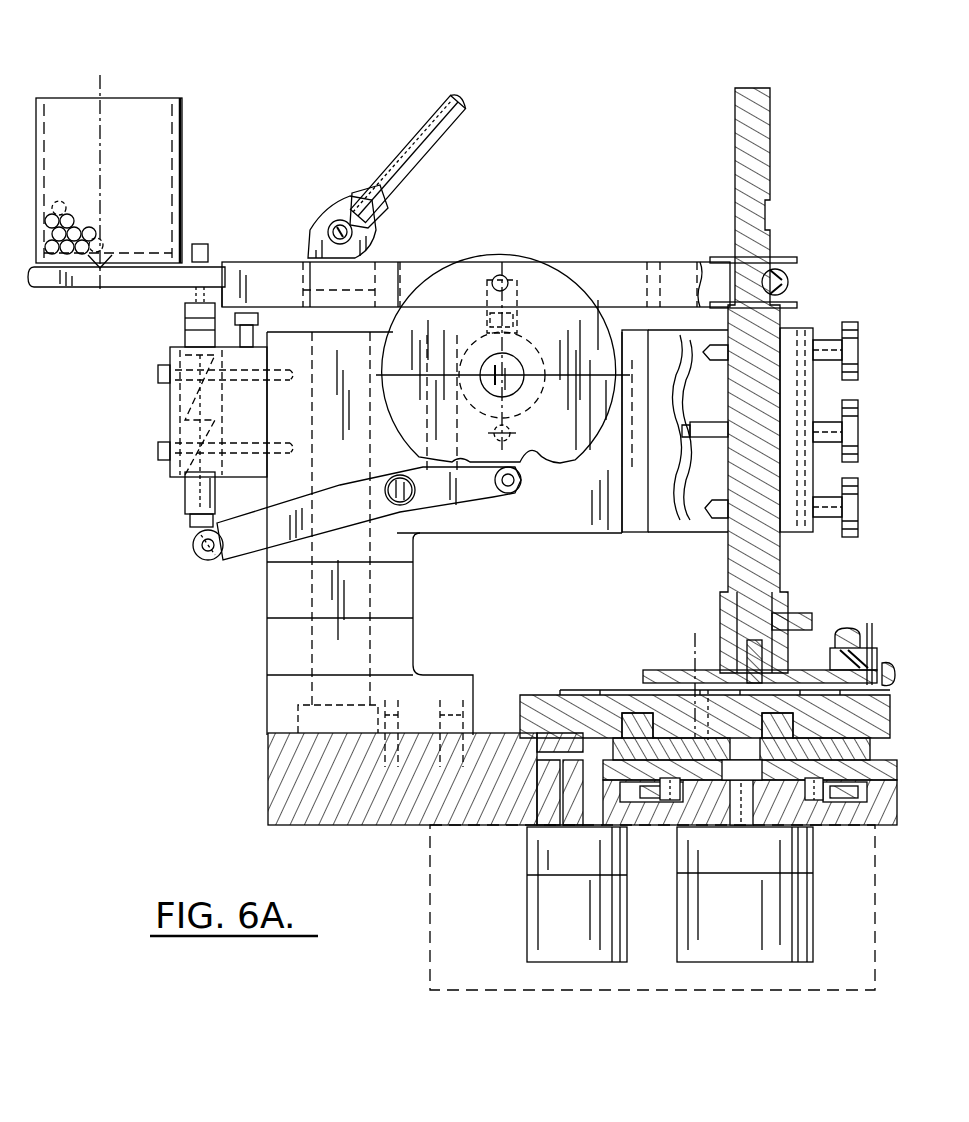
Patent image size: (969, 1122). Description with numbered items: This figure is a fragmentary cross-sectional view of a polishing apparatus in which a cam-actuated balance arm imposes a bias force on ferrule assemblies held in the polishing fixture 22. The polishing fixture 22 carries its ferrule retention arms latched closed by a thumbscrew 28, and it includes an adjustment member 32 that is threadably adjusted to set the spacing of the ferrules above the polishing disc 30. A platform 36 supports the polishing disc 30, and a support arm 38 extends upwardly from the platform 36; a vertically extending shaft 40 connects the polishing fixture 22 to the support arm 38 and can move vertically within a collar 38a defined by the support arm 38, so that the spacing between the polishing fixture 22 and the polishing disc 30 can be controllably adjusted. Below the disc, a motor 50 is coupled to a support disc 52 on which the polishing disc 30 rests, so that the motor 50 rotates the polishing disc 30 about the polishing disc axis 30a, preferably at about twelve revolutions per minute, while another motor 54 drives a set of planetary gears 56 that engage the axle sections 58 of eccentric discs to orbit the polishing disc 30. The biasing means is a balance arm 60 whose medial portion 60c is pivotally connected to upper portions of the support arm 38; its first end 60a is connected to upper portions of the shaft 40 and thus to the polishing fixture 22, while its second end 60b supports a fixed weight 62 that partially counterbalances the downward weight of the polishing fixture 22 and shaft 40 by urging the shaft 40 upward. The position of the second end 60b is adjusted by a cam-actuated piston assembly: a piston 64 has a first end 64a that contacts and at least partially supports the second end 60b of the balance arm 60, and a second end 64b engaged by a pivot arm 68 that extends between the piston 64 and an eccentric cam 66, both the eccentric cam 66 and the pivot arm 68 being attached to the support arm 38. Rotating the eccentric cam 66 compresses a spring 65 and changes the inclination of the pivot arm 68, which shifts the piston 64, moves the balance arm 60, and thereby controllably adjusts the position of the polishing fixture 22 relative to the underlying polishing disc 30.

The polishing fixture 22 is at (650, 677).
The thumbscrew 28 is at (893, 665).
The polishing disc 30 is at (533, 710).
The polishing disc axis 30a is at (694, 650).
The adjustment member 32 is at (807, 616).
The platform 36 is at (886, 800).
The support arm 38 is at (286, 648).
The collar 38a is at (810, 378).
The shaft 40 is at (753, 397).
The motor 50 is at (548, 903).
The support disc 52 is at (577, 753).
The motor 54 is at (793, 908).
The planetary gears 56 is at (790, 790).
The axle sections 58 is at (670, 790).
The balance arm 60 is at (605, 278).
The first end 60a is at (723, 274).
The second end 60b is at (110, 288).
The medial portion 60c is at (494, 277).
The fixed weight 62 is at (150, 130).
The piston 64 is at (190, 497).
The first end 64a is at (197, 293).
The second end 64b is at (190, 520).
The spring 65 is at (183, 443).
The eccentric cam 66 is at (537, 280).
The pivot arm 68 is at (254, 536).